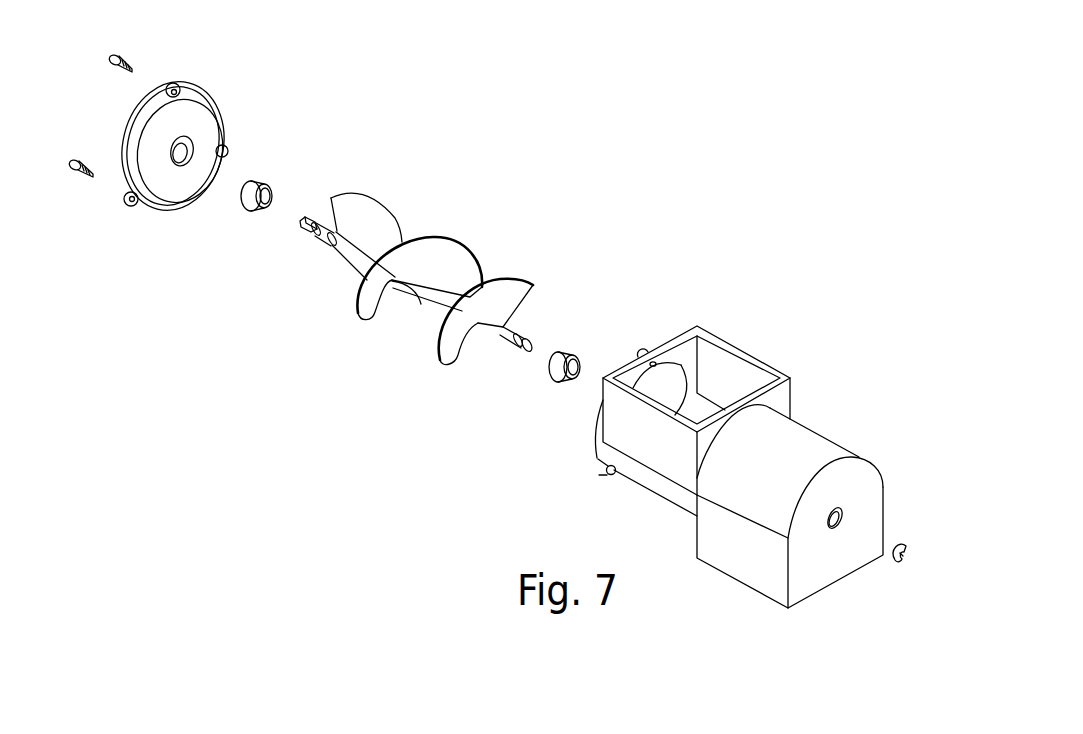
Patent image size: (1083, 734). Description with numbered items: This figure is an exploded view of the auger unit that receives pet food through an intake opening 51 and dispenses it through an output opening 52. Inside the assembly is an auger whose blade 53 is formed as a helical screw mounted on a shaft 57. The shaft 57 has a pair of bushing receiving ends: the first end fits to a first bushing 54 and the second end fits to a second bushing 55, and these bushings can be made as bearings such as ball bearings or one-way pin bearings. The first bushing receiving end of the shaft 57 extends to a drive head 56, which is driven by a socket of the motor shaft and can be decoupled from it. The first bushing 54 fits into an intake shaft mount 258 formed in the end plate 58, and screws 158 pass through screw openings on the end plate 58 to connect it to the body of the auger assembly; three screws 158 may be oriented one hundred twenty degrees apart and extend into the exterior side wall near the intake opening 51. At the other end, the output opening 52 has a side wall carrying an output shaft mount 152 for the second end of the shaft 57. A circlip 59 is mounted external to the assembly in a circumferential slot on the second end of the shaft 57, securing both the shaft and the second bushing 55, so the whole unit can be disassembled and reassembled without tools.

The screws 158 is at (119, 55).
The end plate 58 is at (184, 158).
The intake shaft mount 258 is at (187, 168).
The first bushing 54 is at (273, 200).
The drive head 56 is at (305, 232).
The blade 53 is at (398, 270).
The shaft 57 is at (420, 306).
The second bushing 55 is at (575, 343).
The intake opening 51 is at (683, 348).
The output opening 52 is at (822, 517).
The output shaft mount 152 is at (845, 523).
The circlip 59 is at (902, 566).